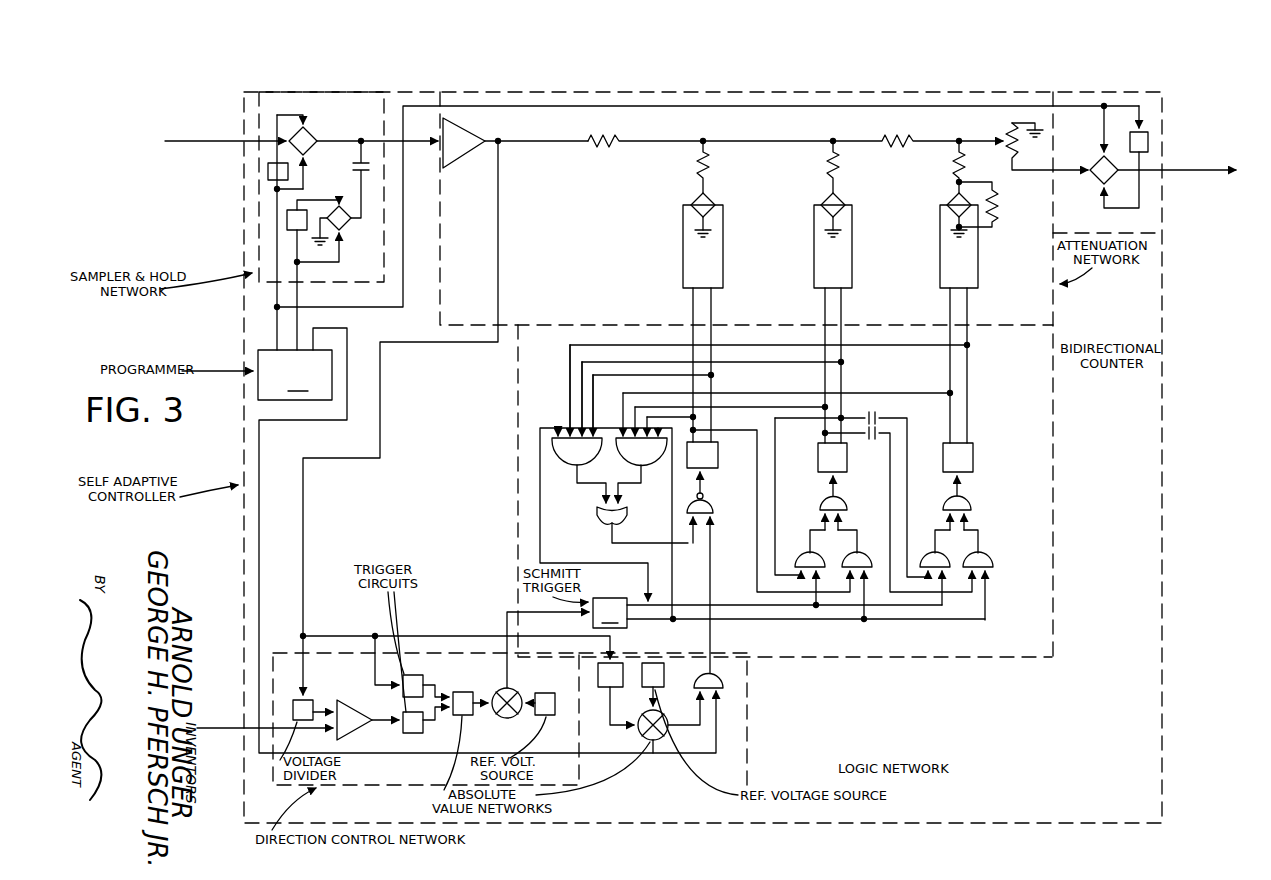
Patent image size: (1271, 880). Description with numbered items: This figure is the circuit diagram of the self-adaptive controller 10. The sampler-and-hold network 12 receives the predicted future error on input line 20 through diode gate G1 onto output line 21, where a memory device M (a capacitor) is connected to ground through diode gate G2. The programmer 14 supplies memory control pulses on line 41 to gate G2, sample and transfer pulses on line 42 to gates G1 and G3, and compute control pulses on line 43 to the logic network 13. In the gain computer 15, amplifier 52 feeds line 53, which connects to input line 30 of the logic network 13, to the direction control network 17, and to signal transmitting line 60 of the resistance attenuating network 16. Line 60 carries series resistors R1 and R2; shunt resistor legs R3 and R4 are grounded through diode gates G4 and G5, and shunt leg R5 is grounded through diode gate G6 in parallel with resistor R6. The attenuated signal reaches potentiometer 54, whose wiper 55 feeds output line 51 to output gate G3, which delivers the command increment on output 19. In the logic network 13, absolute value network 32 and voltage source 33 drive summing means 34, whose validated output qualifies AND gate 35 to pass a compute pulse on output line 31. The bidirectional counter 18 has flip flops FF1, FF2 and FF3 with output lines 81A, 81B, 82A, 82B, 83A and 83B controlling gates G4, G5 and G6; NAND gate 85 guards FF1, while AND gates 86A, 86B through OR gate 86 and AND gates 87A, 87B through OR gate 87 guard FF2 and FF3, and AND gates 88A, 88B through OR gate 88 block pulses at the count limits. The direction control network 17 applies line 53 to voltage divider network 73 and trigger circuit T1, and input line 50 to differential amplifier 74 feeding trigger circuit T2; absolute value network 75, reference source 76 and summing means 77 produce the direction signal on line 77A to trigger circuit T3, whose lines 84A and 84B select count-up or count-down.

The self-adaptive controller 10 is at (240, 518).
The sampler-and-hold network 12 is at (255, 175).
The logic network 13 is at (752, 746).
The programmer 14 is at (295, 375).
The gain computer 15 is at (513, 529).
The resistance attenuating network 16 is at (1058, 302).
The direction control network 17 is at (410, 788).
The bidirectional counter 18 is at (1058, 432).
The command increment output 19 is at (1199, 172).
The input line 20 is at (184, 141).
The output line 21 is at (412, 141).
The input line 30 is at (430, 636).
The output line 31 is at (712, 628).
The absolute value network 32 is at (598, 680).
The voltage source 33 is at (664, 680).
The summing means 34 is at (652, 742).
The AND gate 35 is at (724, 681).
The line 41 is at (295, 334).
The output line 42 is at (1213, 124).
The output line 43 is at (262, 441).
The input line 50 is at (231, 728).
The output line 51 is at (1050, 171).
The amplifier 52 is at (476, 136).
The output line 53 is at (493, 149).
The potentiometer 54 is at (1007, 133).
The wiper 55 is at (968, 147).
The signal transmitting line 60 is at (773, 141).
The voltage divider network 73 is at (312, 702).
The differential amplifier 74 is at (352, 723).
The absolute value network 75 is at (463, 713).
The reference voltage source 76 is at (544, 716).
The summing means 77 is at (508, 718).
The output line 77A is at (504, 622).
The output line 81A is at (683, 276).
The output line 81B is at (723, 275).
The output line 82A is at (814, 246).
The output line 82B is at (852, 245).
The output line 83A is at (940, 275).
The output line 83B is at (978, 275).
The output line 84A is at (672, 482).
The output line 84B is at (538, 438).
The NAND gate 85 is at (714, 506).
The OR gate 86 is at (846, 503).
The AND gate 86A is at (868, 548).
The AND gate 86B is at (796, 548).
The OR gate 87 is at (972, 503).
The AND gate 87A is at (993, 550).
The AND gate 87B is at (923, 550).
The OR gate 88 is at (598, 516).
The AND gate 88A is at (618, 470).
The AND gate 88B is at (577, 472).
The diode gate G1 is at (311, 131).
The diode gate G2 is at (333, 229).
The output gate G3 is at (1094, 189).
The diode gate G4 is at (692, 203).
The diode gate G5 is at (822, 203).
The diode gate G6 is at (947, 203).
The memory device M is at (351, 167).
The resistor R1 is at (610, 137).
The resistor R2 is at (905, 138).
The shunt resistor leg R3 is at (700, 166).
The shunt resistor leg R4 is at (830, 166).
The shunt resistor leg R5 is at (955, 166).
The resistor R6 is at (998, 205).
The trigger circuit T1 is at (425, 679).
The trigger circuit T2 is at (418, 731).
The trigger circuit T3 is at (789, 613).
The flip flop FF1 is at (702, 455).
The flip flop FF2 is at (832, 457).
The flip flop FF3 is at (958, 457).